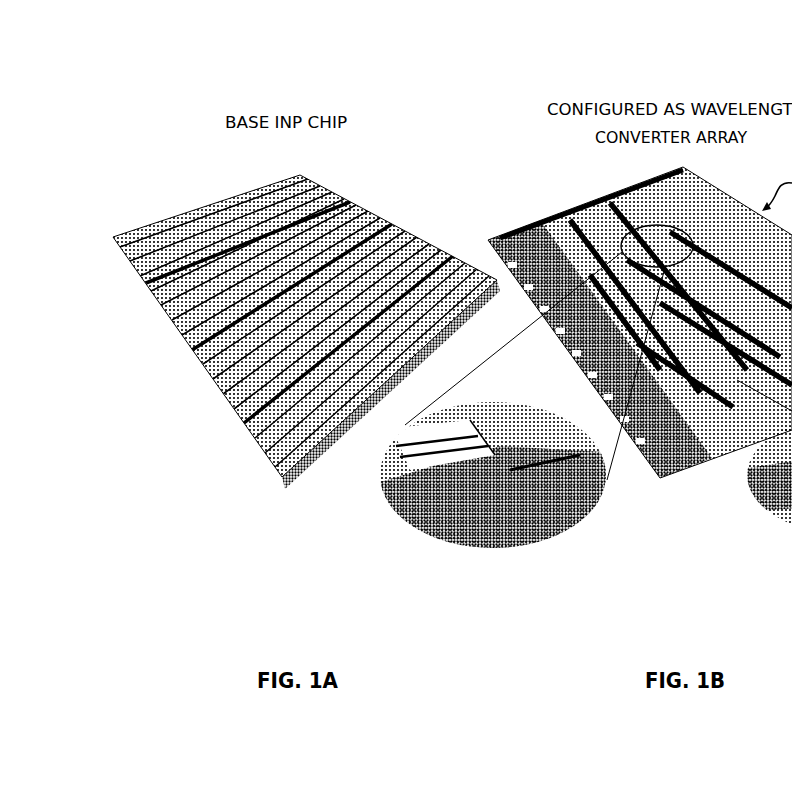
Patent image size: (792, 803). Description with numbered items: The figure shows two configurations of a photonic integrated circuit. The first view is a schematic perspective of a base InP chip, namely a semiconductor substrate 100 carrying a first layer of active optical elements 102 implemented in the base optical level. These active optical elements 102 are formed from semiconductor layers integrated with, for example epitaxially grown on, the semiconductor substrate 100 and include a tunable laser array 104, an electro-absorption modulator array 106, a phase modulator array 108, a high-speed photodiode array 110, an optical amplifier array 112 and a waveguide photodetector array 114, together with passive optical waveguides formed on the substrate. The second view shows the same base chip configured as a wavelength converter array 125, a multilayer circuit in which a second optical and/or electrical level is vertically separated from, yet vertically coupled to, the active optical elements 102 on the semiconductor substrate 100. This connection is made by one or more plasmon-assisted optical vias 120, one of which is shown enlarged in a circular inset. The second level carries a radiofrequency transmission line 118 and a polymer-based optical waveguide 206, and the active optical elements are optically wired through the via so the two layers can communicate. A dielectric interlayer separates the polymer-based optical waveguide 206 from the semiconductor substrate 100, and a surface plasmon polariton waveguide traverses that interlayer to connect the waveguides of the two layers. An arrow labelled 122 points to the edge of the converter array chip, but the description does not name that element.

In FIG. 1A, the semiconductor substrate 100 is at (255, 74).
In FIG. 1A, the active optical elements 102 is at (192, 359).
In FIG. 1A, the tunable laser array 104 is at (373, 372).
In FIG. 1A, the electro-absorption modulator array 106 is at (390, 246).
In FIG. 1A, the phase modulator array 108 is at (203, 220).
In FIG. 1A, the high-speed photodiode array 110 is at (150, 231).
In FIG. 1A, the optical amplifier array 112 is at (327, 200).
In FIG. 1A, the waveguide photodetector array 114 is at (227, 202).
In FIG. 1B, the radiofrequency transmission line 118 is at (681, 389).
In FIG. 1B, the plasmon-assisted optical via 120 is at (480, 478).
In FIG. 1B, the RF electrical level 122 is at (514, 217).
In FIG. 1B, the wavelength converter array 125 is at (640, 306).
In FIG. 1B, the polymer-based optical waveguide 206 is at (557, 480).